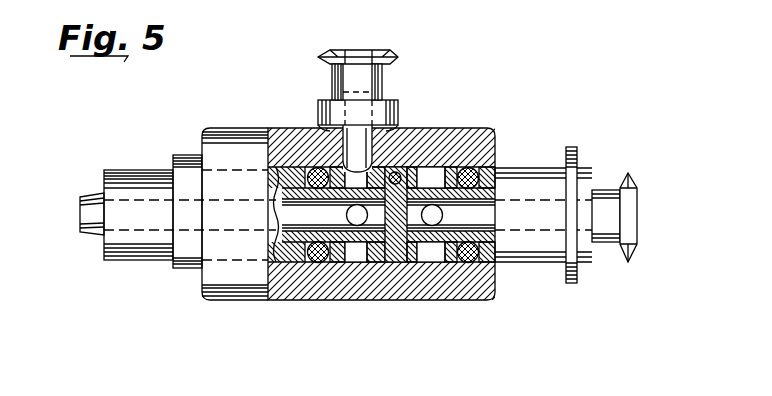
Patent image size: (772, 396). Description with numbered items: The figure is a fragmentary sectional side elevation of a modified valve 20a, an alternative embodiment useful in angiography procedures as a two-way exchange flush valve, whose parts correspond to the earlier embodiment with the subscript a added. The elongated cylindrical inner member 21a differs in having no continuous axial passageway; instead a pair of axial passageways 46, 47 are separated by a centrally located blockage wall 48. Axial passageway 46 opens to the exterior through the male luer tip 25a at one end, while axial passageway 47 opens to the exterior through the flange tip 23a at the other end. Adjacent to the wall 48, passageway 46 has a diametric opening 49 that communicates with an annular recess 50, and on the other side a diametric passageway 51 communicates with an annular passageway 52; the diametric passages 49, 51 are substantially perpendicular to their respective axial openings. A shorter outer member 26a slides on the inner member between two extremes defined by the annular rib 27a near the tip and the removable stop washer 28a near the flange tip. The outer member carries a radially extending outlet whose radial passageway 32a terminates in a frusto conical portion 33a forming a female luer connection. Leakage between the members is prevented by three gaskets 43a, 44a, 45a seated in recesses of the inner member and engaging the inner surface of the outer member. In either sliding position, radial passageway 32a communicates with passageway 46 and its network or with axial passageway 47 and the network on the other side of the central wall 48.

The valve 20a is at (467, 96).
The inner member 21a is at (505, 167).
The flange tip 23a is at (632, 257).
The tip 25a is at (122, 245).
The outer member 26a is at (462, 134).
The annular rib 27a is at (177, 275).
The stop washer 28a is at (573, 284).
The radial passageway 32a is at (360, 143).
The frusto conical portion 33a is at (338, 58).
The gasket 43a is at (322, 172).
The gasket 44a is at (394, 170).
The gasket 45a is at (476, 168).
The axial passageway 46 is at (309, 217).
The axial passageway 47 is at (488, 218).
The blockage wall 48 is at (358, 253).
The diametric opening 49 is at (352, 222).
The annular recess 50 is at (340, 255).
The diametric passageway 51 is at (412, 226).
The annular passageway 52 is at (432, 253).